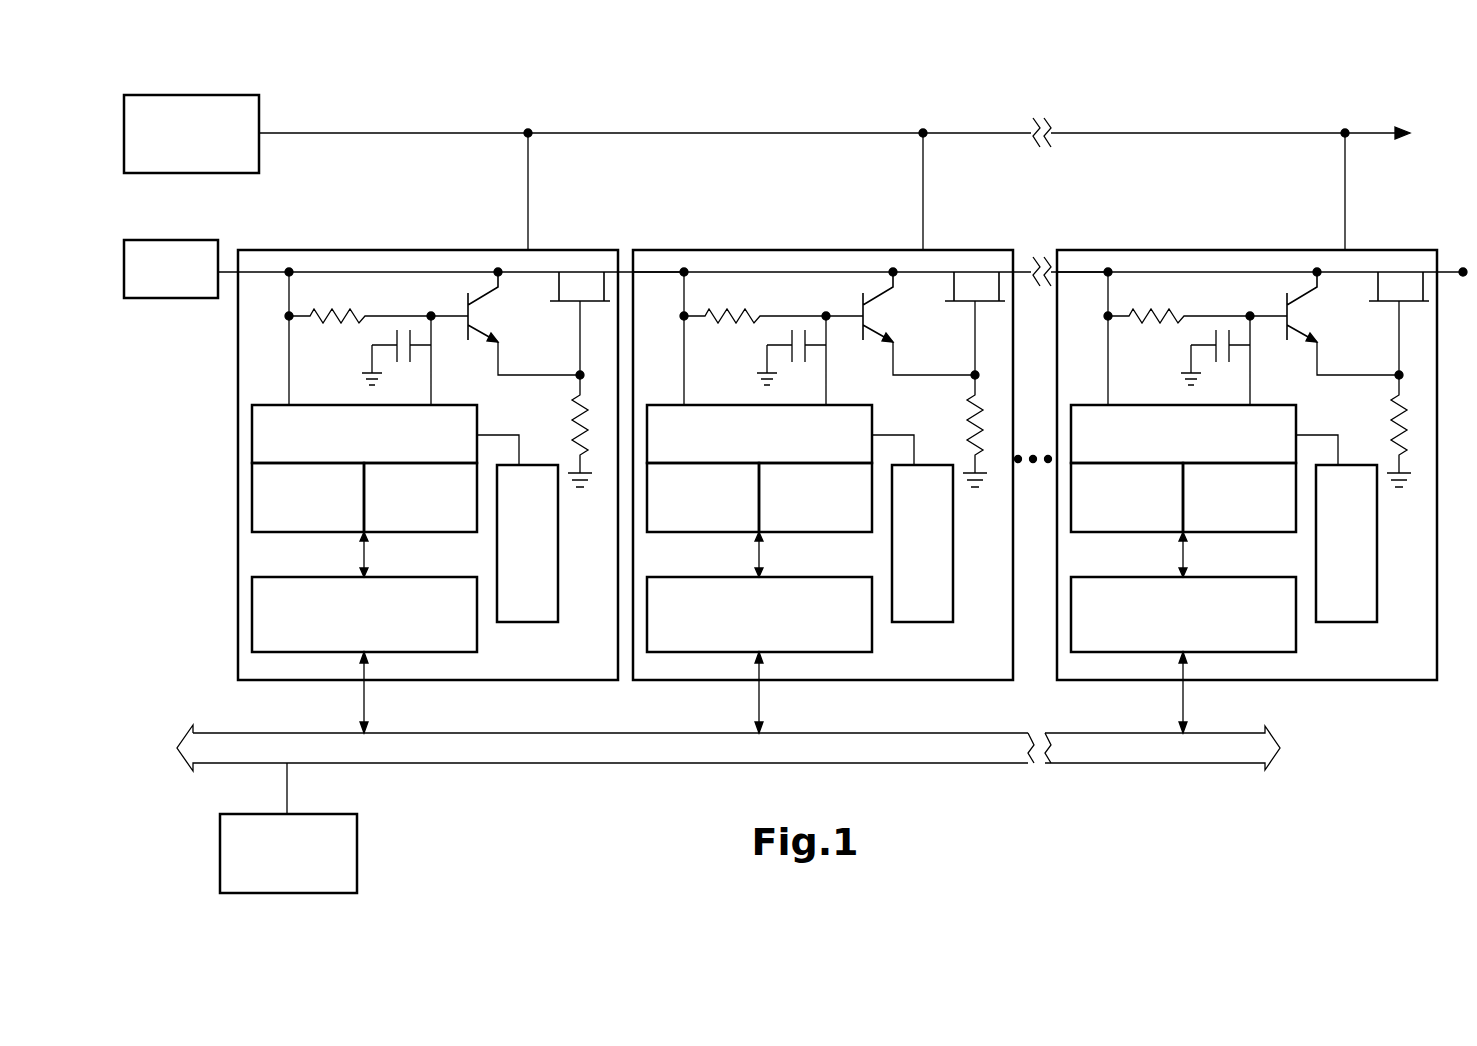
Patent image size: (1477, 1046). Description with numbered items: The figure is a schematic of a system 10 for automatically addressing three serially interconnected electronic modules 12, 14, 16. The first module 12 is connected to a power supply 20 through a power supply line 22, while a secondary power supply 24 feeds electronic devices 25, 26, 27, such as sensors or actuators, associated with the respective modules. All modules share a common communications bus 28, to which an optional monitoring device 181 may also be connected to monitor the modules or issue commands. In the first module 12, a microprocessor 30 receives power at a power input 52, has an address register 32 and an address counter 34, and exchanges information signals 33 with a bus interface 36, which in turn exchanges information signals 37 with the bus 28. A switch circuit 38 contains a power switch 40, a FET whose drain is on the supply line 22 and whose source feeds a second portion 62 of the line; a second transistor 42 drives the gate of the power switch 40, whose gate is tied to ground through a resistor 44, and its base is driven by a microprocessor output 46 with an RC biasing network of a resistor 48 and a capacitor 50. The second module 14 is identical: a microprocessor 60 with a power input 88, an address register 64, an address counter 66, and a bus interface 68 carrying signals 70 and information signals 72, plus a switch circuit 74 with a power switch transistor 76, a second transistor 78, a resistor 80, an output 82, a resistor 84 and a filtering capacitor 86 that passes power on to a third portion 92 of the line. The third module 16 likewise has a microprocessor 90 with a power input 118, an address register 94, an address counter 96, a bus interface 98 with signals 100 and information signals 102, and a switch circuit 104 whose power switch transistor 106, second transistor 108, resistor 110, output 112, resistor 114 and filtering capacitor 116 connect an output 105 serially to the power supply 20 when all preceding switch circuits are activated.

The system 10 is at (1325, 712).
The first module 12 is at (360, 240).
The second module 14 is at (718, 240).
The third module 16 is at (1136, 232).
The power supply 20 is at (168, 240).
The power supply line 22 is at (261, 269).
The secondary power supply 24 is at (259, 112).
The electronic device 25 is at (560, 577).
The electronic device 26 is at (955, 577).
The electronic device 27 is at (1380, 577).
The common communications bus 28 is at (533, 763).
The microprocessor 30 is at (262, 405).
The address register 32 is at (432, 532).
The information signals 33 is at (368, 556).
The address counter 34 is at (322, 532).
The bus interface 36 is at (463, 632).
The information signals 37 is at (366, 699).
The switch circuit 38 is at (570, 248).
The power switch 40 is at (567, 303).
The second transistor 42 is at (466, 300).
The resistor 44 is at (577, 420).
The output 46 is at (434, 403).
The resistor 48 is at (337, 326).
The capacitor 50 is at (396, 360).
The power input 52 is at (289, 403).
The microprocessor 60 is at (661, 410).
The second portion of the power supply line 62 is at (658, 269).
The address register 64 is at (827, 532).
The address counter 66 is at (717, 532).
The bus interface 68 is at (858, 632).
The signals 70 is at (763, 556).
The information signals 72 is at (761, 699).
The switch circuit 74 is at (970, 248).
The power switch transistor 76 is at (963, 303).
The second transistor 78 is at (861, 300).
The resistor 80 is at (970, 420).
The output 82 is at (829, 403).
The resistor 84 is at (739, 310).
The filtering capacitor 86 is at (768, 333).
The power input 88 is at (685, 384).
The microprocessor 90 is at (1088, 410).
The third portion of the power supply line 92 is at (1084, 270).
The address register 94 is at (1253, 532).
The address counter 96 is at (1136, 532).
The bus interface 98 is at (1280, 632).
The signals 100 is at (1187, 556).
The information signals 102 is at (1184, 699).
The switch circuit 104 is at (1392, 248).
The output 105 is at (1447, 265).
The power switch transistor 106 is at (1388, 303).
The second transistor 108 is at (1285, 300).
The resistor 110 is at (1395, 420).
The output 112 is at (1254, 403).
The resistor 114 is at (1148, 316).
The filtering capacitor 116 is at (1192, 334).
The power input 118 is at (1109, 385).
The optional monitoring device 181 is at (352, 835).